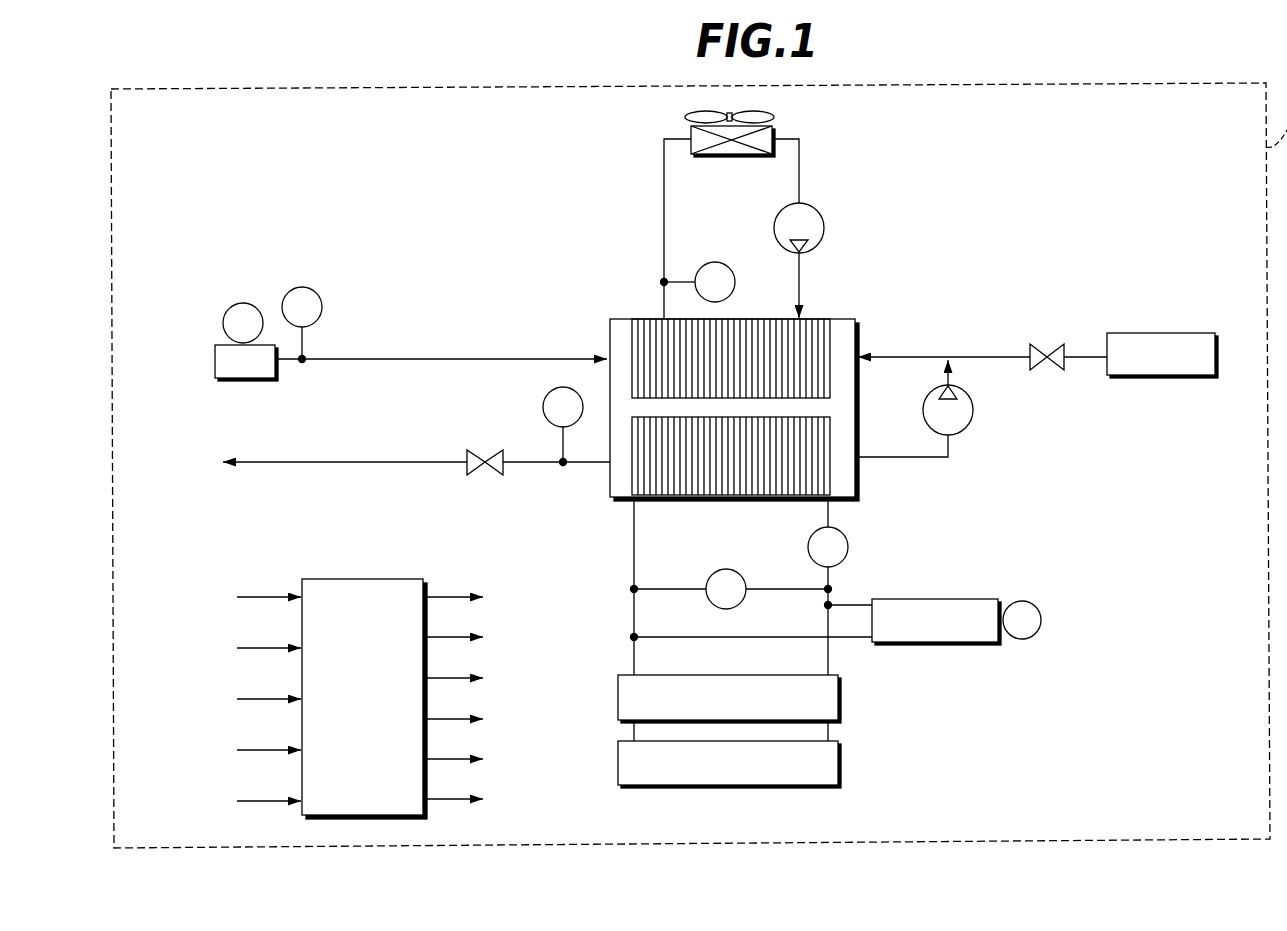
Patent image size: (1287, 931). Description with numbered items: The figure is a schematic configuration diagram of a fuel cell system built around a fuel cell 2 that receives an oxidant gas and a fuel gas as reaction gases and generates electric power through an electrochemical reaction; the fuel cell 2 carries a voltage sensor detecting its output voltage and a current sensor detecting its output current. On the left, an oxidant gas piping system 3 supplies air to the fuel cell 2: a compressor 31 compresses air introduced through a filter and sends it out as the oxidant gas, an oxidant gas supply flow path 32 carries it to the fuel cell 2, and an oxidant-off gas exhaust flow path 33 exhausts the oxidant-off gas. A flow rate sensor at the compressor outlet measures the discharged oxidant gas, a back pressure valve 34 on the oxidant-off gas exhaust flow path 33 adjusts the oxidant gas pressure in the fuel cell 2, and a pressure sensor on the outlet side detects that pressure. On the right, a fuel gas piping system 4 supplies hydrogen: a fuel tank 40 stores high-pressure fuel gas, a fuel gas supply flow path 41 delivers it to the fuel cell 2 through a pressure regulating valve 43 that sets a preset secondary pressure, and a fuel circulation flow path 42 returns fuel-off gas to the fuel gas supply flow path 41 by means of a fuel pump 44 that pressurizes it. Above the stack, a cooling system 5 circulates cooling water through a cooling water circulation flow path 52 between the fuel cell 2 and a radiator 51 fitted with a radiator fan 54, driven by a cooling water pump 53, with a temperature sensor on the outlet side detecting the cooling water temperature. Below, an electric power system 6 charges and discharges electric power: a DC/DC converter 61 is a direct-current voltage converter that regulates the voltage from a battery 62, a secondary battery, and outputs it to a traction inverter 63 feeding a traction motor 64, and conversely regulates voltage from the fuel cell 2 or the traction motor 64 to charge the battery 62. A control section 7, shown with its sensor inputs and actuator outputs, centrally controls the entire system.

The fuel cell 2 is at (641, 318).
The oxidant gas piping system 3 is at (407, 259).
The fuel gas piping system 4 is at (1070, 243).
The cooling system 5 is at (640, 170).
The electric power system 6 is at (1080, 708).
The control section 7 is at (360, 578).
The compressor 31 is at (215, 360).
The oxidant gas supply flow path 32 is at (480, 358).
The oxidant-off gas exhaust flow path 33 is at (385, 462).
The back pressure valve 34 is at (485, 450).
The fuel tank 40 is at (1162, 333).
The fuel gas supply flow path 41 is at (985, 357).
The fuel circulation flow path 42 is at (930, 459).
The pressure regulating valve 43 is at (1040, 345).
The fuel pump 44 is at (975, 410).
The radiator 51 is at (772, 133).
The cooling water circulation flow path 52 is at (665, 200).
The cooling water pump 53 is at (824, 230).
The radiator fan 54 is at (775, 118).
The DC/DC converter 61 is at (840, 688).
The battery 62 is at (840, 762).
The traction inverter 63 is at (912, 599).
The traction motor 64 is at (1018, 601).